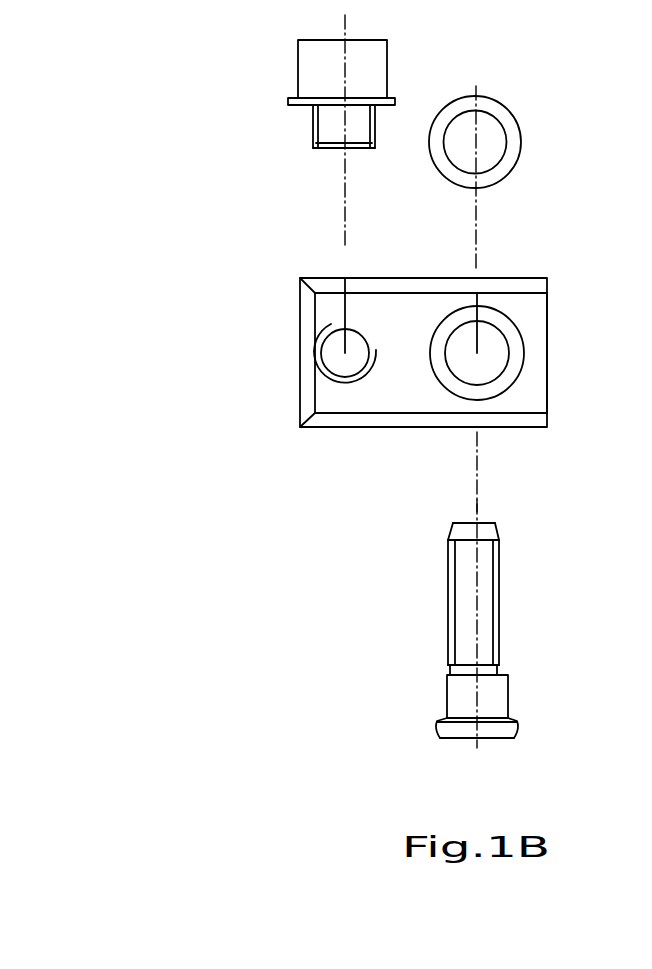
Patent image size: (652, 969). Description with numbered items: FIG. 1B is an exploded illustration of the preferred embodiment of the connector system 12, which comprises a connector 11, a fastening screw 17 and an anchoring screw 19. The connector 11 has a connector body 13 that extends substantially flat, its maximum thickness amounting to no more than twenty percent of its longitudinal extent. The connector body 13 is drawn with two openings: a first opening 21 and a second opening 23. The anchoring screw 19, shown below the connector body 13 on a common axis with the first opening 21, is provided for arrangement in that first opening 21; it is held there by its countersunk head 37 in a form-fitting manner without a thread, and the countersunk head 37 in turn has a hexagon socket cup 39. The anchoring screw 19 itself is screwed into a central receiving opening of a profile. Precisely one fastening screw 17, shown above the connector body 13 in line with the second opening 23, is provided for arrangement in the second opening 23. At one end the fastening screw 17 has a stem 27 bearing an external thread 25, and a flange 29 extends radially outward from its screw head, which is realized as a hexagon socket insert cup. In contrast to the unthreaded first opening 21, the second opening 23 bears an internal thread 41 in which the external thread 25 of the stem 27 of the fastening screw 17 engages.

The connector 11 is at (419, 373).
The connector system 12 is at (218, 429).
The connector body 13 is at (393, 417).
The fastening screw 17 is at (330, 138).
The anchoring screw 19 is at (506, 662).
The first opening 21 is at (493, 352).
The second opening 23 is at (377, 353).
The external thread 25 is at (370, 130).
The stem 27 is at (330, 148).
The flange 29 is at (396, 99).
The countersunk head 37 is at (515, 736).
The hexagon socket cup 39 is at (483, 740).
The internal thread 41 is at (345, 332).